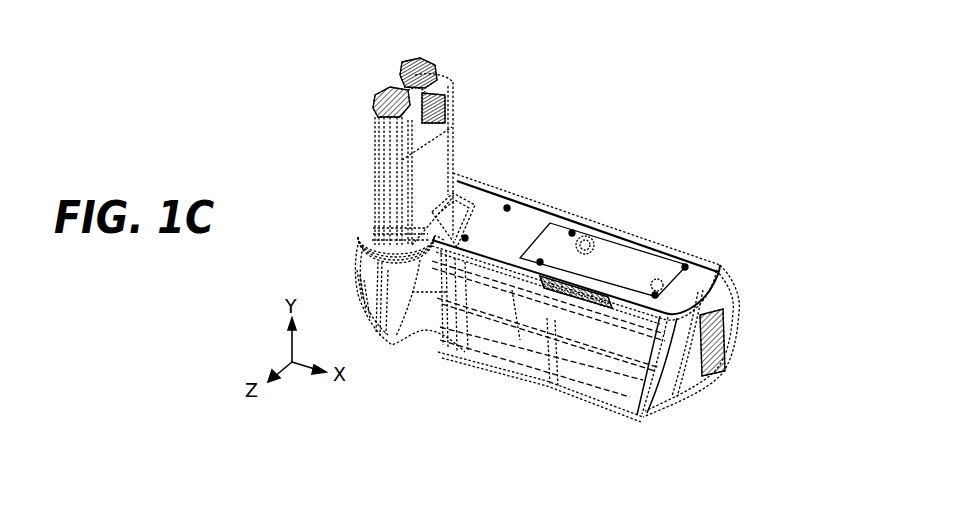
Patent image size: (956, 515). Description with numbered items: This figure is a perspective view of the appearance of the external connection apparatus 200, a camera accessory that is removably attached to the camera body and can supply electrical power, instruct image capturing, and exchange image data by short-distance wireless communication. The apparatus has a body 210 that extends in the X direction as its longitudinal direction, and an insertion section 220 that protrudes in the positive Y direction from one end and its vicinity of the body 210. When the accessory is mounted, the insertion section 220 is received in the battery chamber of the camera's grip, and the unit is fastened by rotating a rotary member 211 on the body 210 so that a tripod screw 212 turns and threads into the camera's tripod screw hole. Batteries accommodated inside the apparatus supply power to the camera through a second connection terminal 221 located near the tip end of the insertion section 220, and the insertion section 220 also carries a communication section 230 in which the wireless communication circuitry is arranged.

The external connection apparatus 200 is at (632, 118).
The body 210 is at (358, 265).
The rotary member 211 is at (597, 290).
The tripod screw 212 is at (588, 237).
The insertion section 220 is at (377, 168).
The second connection terminal 221 is at (447, 84).
The communication section 230 is at (442, 176).